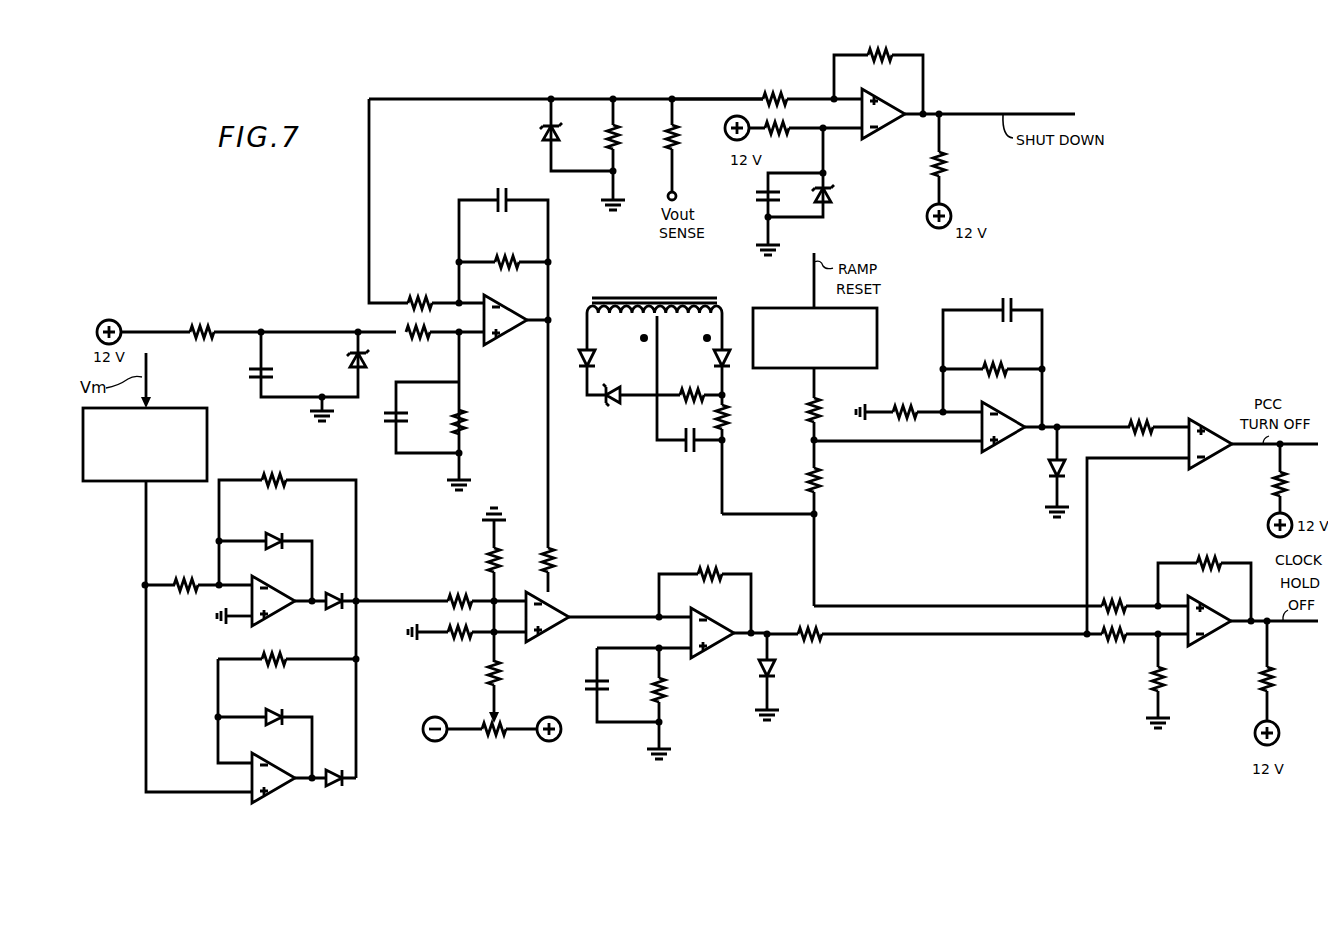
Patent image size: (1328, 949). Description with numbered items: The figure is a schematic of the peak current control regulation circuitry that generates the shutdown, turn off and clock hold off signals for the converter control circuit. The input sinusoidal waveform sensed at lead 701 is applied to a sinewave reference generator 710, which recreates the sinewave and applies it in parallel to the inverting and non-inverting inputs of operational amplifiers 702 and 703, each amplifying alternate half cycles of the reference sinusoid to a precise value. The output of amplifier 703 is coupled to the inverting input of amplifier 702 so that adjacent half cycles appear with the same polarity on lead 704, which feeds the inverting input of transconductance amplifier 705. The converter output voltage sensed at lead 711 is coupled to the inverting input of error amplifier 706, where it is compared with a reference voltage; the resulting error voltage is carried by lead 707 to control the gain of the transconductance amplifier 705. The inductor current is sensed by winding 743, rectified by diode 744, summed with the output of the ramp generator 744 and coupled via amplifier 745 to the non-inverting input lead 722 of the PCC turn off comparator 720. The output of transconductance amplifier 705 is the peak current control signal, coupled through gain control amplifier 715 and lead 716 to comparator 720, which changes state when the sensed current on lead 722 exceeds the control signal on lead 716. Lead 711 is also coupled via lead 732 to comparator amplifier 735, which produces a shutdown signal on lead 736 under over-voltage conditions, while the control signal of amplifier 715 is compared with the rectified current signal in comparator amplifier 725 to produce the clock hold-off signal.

The input sinewave lead 701 is at (146, 384).
The operational amplifier 702 is at (262, 592).
The operational amplifier 703 is at (262, 768).
The lead 704 is at (375, 601).
The transconductance amplifier 705 is at (570, 612).
The error amplifier 706 is at (500, 300).
The lead 707 is at (548, 488).
The sinewave reference generator 710 is at (207, 443).
The output voltage sensing lead 711 is at (672, 163).
The gain control amplifier 715 is at (710, 652).
The lead 716 is at (1088, 553).
The PCC turn off comparator 720 is at (1253, 449).
The non-inverting input lead 722 is at (1163, 420).
The comparator amplifier 725 is at (1203, 600).
The lead 732 is at (717, 99).
The comparator amplifier 735 is at (870, 92).
The shutdown signal lead 736 is at (978, 113).
The winding 743 is at (722, 306).
The diode / ramp generator 744 is at (877, 348).
The amplifier 745 is at (992, 455).